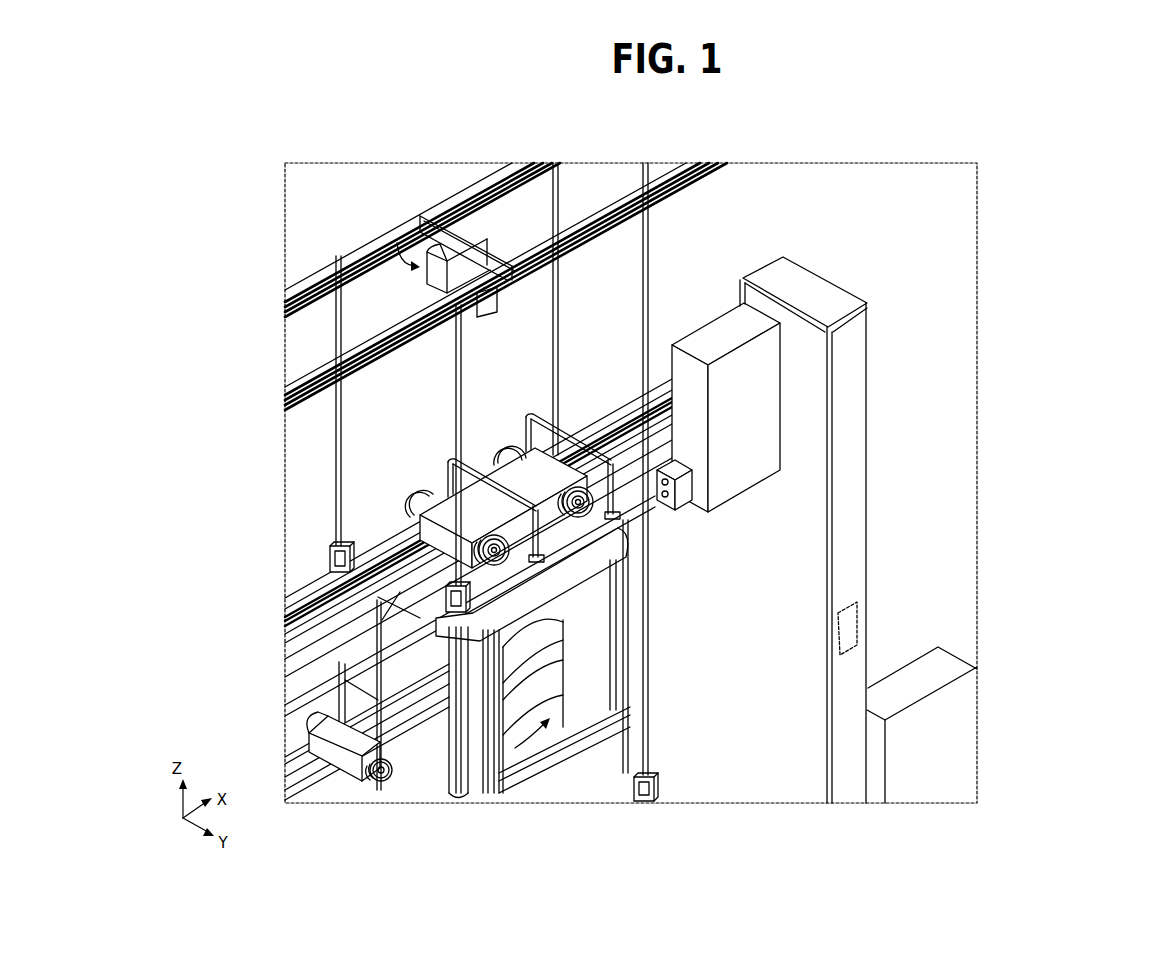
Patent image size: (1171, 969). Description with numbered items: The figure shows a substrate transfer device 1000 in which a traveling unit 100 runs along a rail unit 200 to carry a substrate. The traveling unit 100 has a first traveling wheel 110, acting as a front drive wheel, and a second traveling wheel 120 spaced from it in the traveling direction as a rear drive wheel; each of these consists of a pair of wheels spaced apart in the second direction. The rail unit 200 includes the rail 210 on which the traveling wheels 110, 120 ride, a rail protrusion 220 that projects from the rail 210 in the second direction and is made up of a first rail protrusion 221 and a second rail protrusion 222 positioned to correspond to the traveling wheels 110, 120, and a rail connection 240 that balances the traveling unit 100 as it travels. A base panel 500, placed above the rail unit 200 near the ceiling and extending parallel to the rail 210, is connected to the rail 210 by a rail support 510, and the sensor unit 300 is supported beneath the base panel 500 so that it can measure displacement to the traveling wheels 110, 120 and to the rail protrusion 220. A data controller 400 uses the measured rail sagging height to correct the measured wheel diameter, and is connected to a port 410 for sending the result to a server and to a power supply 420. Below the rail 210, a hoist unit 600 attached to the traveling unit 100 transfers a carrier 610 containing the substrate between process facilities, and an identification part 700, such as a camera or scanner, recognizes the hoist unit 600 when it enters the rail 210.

The substrate transfer device 1000 is at (1020, 133).
The traveling unit 100 is at (1118, 308).
The first traveling wheel 110 is at (1072, 288).
The second traveling wheel 120 is at (1072, 349).
The rail unit 200 is at (1118, 424).
The rail 210 is at (286, 635).
The rail protrusion 220 is at (1070, 436).
The first rail protrusion 221 is at (510, 610).
The second rail protrusion 222 is at (420, 516).
The rail connection 240 is at (456, 460).
The sensor unit 300 is at (392, 240).
The data controller 400 is at (721, 327).
The port 410 is at (868, 618).
The power supply 420 is at (962, 742).
The base panel 500 is at (509, 165).
The rail support 510 is at (338, 353).
The hoist unit 600 is at (435, 747).
The carrier 610 is at (548, 690).
The identification part 700 is at (675, 508).